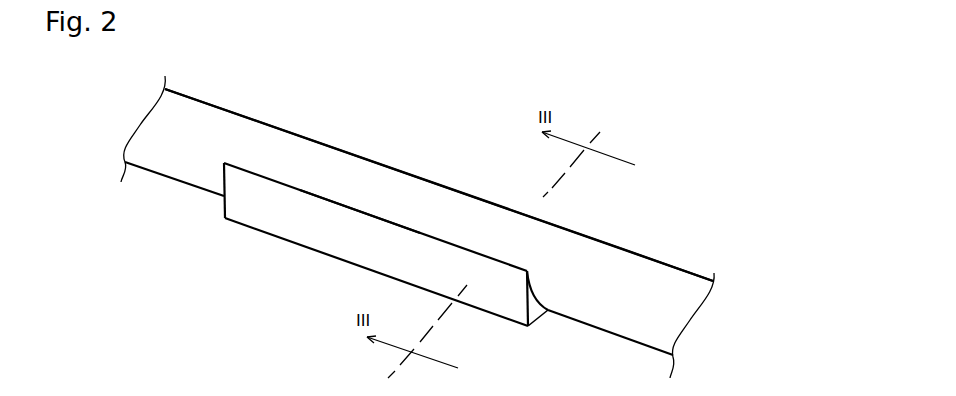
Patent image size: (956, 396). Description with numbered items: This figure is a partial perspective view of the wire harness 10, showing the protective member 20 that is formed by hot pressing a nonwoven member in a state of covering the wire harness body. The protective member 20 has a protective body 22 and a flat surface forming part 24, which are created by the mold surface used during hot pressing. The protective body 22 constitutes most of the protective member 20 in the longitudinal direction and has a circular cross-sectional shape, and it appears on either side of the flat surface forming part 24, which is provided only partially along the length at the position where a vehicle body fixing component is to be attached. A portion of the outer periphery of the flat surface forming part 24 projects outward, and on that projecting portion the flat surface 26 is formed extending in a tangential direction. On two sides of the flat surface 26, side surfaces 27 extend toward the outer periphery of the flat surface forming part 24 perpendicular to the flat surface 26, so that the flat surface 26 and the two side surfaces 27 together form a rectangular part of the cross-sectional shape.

The wire harness 10 is at (395, 148).
The protective member 20 is at (640, 257).
The protective body 22 is at (191, 108).
The flat surface forming part 24 is at (487, 200).
The flat surface 26 is at (497, 283).
The side surfaces 27 is at (340, 242).